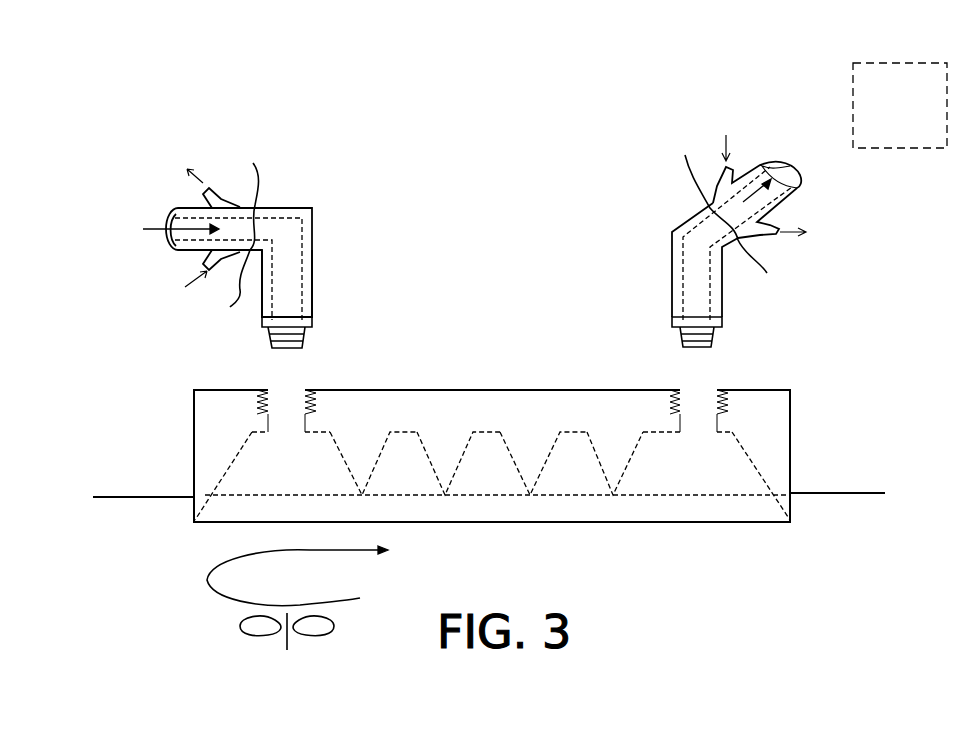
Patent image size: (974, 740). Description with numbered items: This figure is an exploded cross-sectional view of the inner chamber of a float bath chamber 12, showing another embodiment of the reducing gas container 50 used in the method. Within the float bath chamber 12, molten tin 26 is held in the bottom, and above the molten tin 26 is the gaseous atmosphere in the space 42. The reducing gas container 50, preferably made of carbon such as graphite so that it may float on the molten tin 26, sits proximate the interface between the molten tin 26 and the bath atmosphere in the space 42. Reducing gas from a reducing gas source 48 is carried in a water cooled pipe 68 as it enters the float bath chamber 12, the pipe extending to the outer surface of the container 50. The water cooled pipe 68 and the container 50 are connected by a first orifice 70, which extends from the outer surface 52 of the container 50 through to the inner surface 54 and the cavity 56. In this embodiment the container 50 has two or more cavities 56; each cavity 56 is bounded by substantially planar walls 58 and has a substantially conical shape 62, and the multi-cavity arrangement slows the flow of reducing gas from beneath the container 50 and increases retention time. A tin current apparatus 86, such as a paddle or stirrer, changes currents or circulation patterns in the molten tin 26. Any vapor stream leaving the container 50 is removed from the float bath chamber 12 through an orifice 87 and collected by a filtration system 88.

The float bath chamber 12 is at (493, 234).
The molten tin 26 is at (142, 526).
The space 42 is at (142, 477).
The reducing gas source 48 is at (166, 231).
The reducing gas container 50 is at (773, 433).
The outer surface 52 is at (480, 389).
The inner surface 54 is at (487, 432).
The cavity 56 is at (568, 435).
The planar walls 58 is at (312, 452).
The conical shape 62 is at (400, 453).
The water cooled pipe 68 is at (312, 268).
The first orifice 70 is at (280, 348).
The tin current apparatus 86 is at (308, 633).
The orifice 87 is at (692, 347).
The filtration system 88 is at (900, 105).